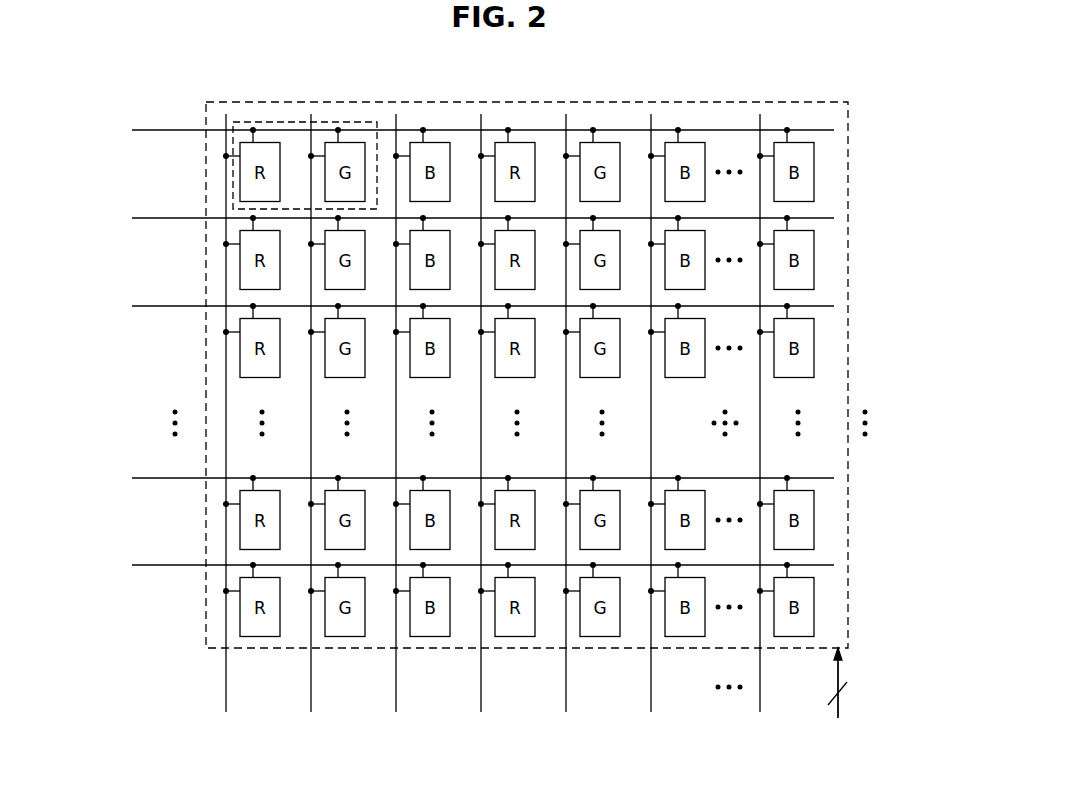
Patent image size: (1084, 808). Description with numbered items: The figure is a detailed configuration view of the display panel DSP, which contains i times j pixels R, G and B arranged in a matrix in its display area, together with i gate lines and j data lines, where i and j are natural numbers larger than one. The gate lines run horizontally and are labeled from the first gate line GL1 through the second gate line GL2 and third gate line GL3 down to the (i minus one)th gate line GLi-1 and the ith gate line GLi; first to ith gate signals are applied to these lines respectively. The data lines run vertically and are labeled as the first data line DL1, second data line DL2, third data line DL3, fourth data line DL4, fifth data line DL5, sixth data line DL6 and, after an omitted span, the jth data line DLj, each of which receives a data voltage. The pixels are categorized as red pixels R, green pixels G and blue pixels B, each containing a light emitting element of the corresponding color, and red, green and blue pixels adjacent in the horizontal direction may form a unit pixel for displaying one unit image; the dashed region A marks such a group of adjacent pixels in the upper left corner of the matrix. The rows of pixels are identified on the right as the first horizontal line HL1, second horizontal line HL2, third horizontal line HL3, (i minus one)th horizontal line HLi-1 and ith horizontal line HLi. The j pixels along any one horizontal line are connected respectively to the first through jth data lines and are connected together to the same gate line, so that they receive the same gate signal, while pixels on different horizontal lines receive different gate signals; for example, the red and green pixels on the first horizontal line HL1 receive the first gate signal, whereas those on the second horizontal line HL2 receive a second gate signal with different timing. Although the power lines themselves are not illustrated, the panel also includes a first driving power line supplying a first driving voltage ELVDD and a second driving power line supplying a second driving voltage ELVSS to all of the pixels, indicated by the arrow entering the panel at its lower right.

The display panel DSP is at (848, 116).
The pixel unit region A is at (233, 182).
The first gate line GL1 is at (483, 122).
The second gate line GL2 is at (483, 209).
The third gate line GL3 is at (483, 297).
The (i-1)th gate line GLi-1 is at (483, 468).
The ith gate line GLi is at (483, 555).
The first data line DL1 is at (209, 413).
The second data line DL2 is at (294, 413).
The third data line DL3 is at (379, 413).
The fourth data line DL4 is at (464, 413).
The fifth data line DL5 is at (549, 413).
The sixth data line DL6 is at (634, 413).
The jth data line DLj is at (781, 413).
The first horizontal line HL1 is at (575, 169).
The second horizontal line HL2 is at (575, 257).
The third horizontal line HL3 is at (575, 345).
The (i-1)th horizontal line HLi-1 is at (581, 517).
The ith horizontal line HLi is at (573, 604).
The first driving voltage ELVDD is at (837, 697).
The second driving voltage ELVSS is at (835, 712).